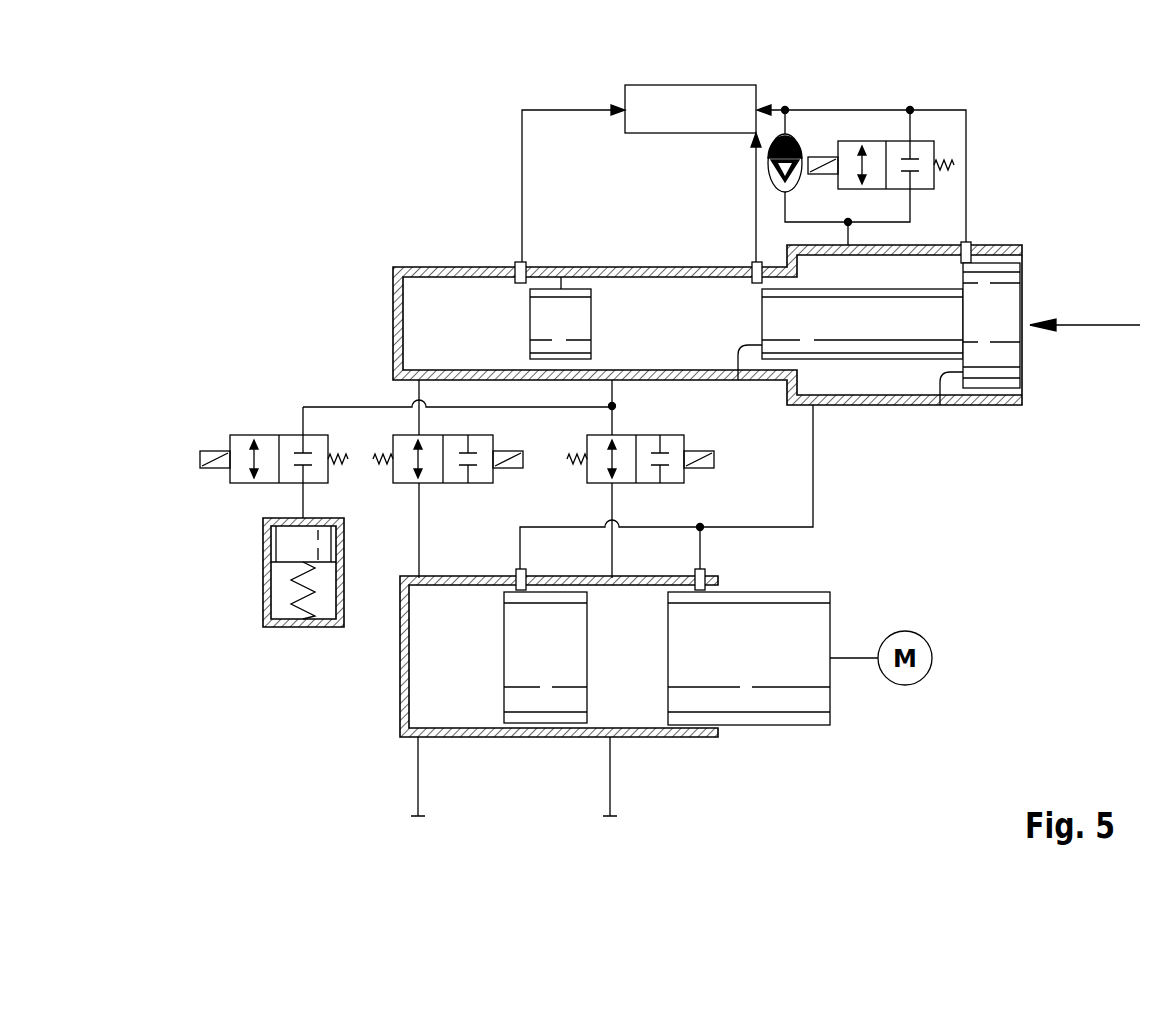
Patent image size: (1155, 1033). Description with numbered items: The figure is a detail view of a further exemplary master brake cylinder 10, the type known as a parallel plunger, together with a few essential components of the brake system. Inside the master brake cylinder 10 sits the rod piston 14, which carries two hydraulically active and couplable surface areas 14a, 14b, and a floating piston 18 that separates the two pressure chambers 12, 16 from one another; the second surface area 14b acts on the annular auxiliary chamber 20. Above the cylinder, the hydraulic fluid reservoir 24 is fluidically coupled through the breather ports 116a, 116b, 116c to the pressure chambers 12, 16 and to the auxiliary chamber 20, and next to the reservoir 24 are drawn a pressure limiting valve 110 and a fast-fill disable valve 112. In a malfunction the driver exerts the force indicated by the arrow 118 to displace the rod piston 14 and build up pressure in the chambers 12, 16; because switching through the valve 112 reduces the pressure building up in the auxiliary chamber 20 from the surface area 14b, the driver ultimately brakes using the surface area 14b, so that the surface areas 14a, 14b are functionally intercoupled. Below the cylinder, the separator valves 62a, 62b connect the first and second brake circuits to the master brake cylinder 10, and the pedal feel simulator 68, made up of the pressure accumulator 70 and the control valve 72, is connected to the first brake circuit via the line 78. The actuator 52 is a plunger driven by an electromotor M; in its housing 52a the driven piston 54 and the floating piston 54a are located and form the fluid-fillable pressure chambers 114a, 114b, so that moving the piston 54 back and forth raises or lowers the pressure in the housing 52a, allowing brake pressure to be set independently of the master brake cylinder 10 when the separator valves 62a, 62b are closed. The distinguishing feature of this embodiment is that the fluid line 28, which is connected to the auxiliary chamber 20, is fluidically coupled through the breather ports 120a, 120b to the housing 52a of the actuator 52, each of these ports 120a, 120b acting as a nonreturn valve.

The master brake cylinder 10 is at (421, 266).
The pressure chamber 12 is at (675, 284).
The rod piston 14 is at (1018, 297).
The first hydraulically active surface area 14a is at (738, 380).
The second hydraulically active surface area 14b is at (940, 405).
The pressure chamber 16 is at (408, 322).
The floating piston 18 is at (571, 288).
The auxiliary chamber 20 is at (938, 256).
The hydraulic fluid reservoir 24 is at (688, 84).
The fluid line 28 is at (813, 470).
The actuator 52 is at (778, 755).
The plunger housing 52a is at (463, 738).
The piston 54 is at (823, 611).
The floating piston 54a is at (545, 717).
The separator valve 62a is at (645, 452).
The separator valve 62b is at (455, 484).
The pedal feel simulator 68 is at (258, 611).
The pressure accumulator 70 is at (263, 591).
The control valve 72 is at (262, 445).
The line 78 is at (490, 408).
The pressure limiting valve 110 is at (795, 142).
The fast-fill disable valve 112 is at (874, 141).
The pressure chamber 114a is at (600, 595).
The pressure chamber 114b is at (413, 681).
The breather port 116a is at (518, 262).
The breather port 116b is at (754, 262).
The breather port 116c is at (966, 242).
The arrow 118 is at (1085, 325).
The breather port 120a is at (700, 569).
The breather port 120b is at (520, 569).